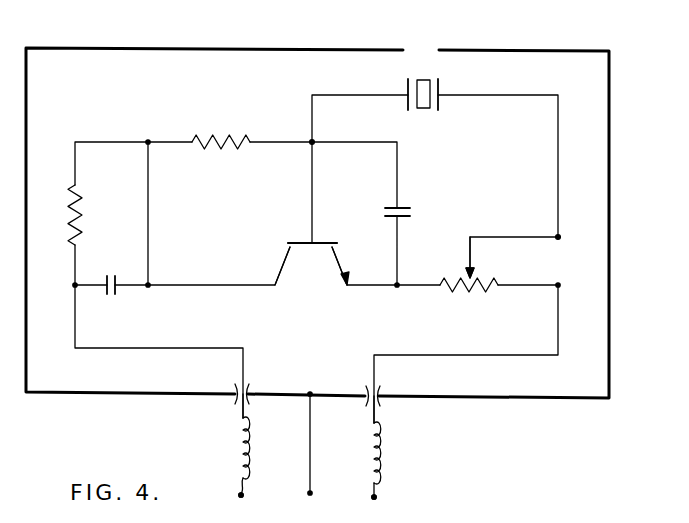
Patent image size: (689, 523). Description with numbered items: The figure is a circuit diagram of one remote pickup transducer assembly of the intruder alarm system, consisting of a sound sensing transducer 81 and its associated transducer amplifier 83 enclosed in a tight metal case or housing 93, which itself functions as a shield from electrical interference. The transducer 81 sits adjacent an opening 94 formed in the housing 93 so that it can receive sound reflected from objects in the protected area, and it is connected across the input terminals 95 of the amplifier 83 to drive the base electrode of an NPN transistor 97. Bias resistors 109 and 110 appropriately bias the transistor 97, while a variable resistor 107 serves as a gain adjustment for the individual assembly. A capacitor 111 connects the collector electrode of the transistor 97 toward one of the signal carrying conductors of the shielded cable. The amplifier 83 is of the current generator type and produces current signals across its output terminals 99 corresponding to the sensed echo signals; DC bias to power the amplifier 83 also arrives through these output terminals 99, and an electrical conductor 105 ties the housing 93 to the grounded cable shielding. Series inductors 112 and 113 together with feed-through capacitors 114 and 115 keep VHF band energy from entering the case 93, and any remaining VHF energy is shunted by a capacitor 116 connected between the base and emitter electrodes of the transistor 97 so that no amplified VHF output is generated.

The sound sensing transducer 81 is at (440, 85).
The transducer amplifier 83 is at (214, 233).
The housing 93 is at (609, 148).
The opening 94 is at (423, 52).
The input terminals 95 is at (312, 142).
The transistor 97 is at (304, 242).
The output terminals 99 is at (241, 496).
The electrical conductor 105 is at (310, 470).
The variable resistor 107 is at (462, 295).
The bias resistor 109 is at (228, 136).
The bias resistor 110 is at (78, 218).
The capacitor 111 is at (116, 288).
The series inductor 112 is at (236, 447).
The series inductor 113 is at (382, 447).
The feed-through capacitor 114 is at (252, 392).
The feed-through capacitor 115 is at (383, 392).
The capacitor 116 is at (394, 208).